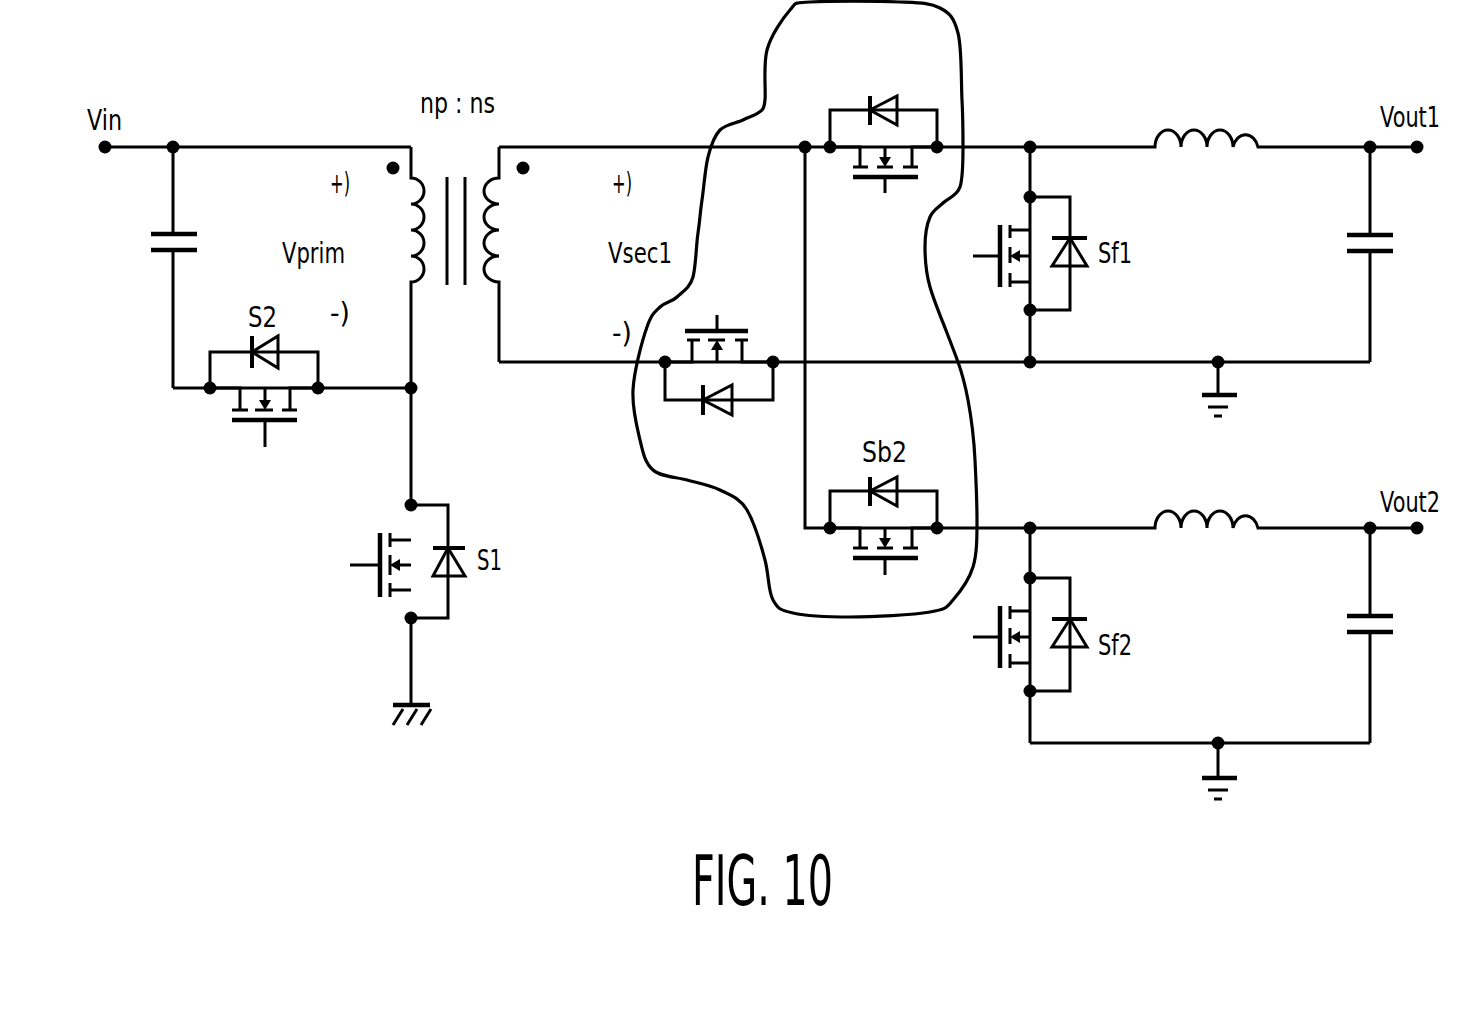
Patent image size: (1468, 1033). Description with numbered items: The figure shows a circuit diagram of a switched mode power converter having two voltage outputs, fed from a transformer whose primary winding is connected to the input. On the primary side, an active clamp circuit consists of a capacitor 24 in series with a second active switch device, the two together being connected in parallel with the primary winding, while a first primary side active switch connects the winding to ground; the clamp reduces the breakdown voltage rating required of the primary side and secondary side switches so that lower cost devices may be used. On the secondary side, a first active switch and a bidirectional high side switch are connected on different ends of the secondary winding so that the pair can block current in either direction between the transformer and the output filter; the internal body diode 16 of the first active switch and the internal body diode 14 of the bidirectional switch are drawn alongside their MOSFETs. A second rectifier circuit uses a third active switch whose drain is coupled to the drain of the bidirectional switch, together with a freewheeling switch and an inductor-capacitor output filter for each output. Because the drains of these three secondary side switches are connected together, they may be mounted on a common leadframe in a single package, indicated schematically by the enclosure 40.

The internal body diode 14 is at (882, 94).
The internal body diode 16 is at (730, 318).
The capacitor 24 is at (160, 252).
The enclosure 40 is at (962, 50).